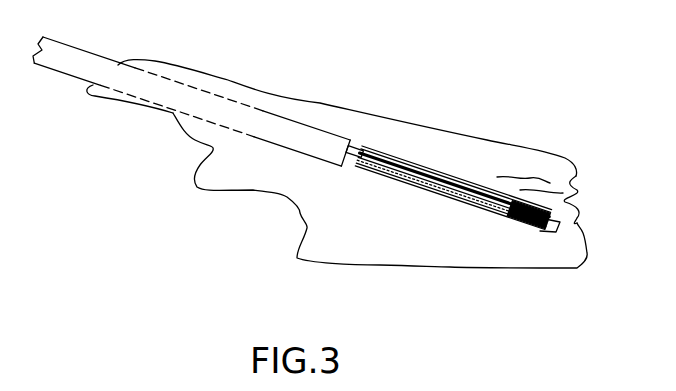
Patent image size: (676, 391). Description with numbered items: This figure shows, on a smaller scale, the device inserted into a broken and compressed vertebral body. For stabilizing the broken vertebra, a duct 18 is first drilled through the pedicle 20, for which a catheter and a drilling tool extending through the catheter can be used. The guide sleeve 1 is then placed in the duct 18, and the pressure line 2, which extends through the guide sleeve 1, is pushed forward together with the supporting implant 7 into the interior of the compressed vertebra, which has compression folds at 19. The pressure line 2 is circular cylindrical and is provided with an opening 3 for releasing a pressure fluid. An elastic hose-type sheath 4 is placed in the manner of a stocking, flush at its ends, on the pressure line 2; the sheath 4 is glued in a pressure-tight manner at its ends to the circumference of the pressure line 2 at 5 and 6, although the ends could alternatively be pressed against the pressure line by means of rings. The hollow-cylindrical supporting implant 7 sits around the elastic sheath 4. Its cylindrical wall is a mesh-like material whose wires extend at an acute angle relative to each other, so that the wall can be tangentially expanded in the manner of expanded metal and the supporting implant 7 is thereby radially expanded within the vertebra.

The guide sleeve 1 is at (265, 128).
The pressure line 2 is at (353, 147).
The opening 3 is at (527, 213).
The elastic hose-type sheath 4 is at (433, 190).
The glued connection 5 is at (368, 167).
The glued connection 6 is at (547, 200).
The supporting implant 7 is at (457, 173).
The duct 18 is at (222, 128).
The compression folds 19 is at (583, 200).
The pedicle 20 is at (181, 72).